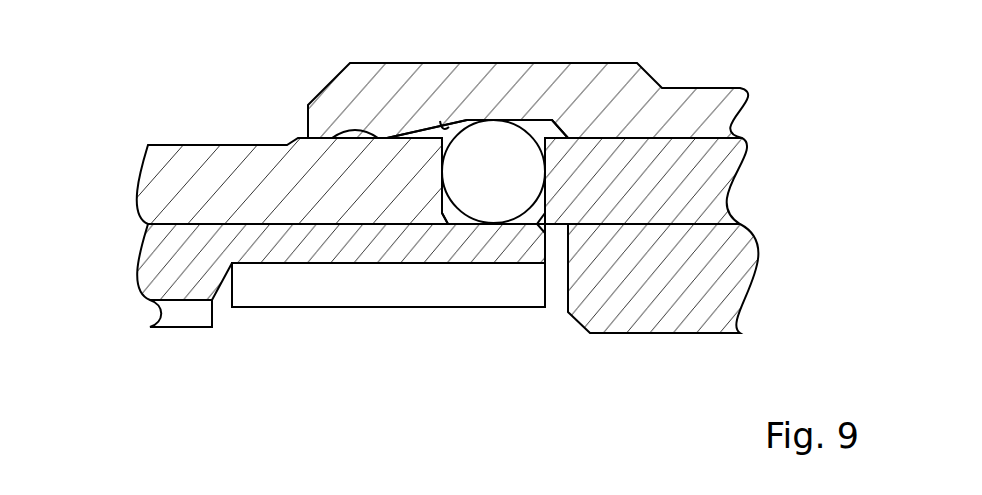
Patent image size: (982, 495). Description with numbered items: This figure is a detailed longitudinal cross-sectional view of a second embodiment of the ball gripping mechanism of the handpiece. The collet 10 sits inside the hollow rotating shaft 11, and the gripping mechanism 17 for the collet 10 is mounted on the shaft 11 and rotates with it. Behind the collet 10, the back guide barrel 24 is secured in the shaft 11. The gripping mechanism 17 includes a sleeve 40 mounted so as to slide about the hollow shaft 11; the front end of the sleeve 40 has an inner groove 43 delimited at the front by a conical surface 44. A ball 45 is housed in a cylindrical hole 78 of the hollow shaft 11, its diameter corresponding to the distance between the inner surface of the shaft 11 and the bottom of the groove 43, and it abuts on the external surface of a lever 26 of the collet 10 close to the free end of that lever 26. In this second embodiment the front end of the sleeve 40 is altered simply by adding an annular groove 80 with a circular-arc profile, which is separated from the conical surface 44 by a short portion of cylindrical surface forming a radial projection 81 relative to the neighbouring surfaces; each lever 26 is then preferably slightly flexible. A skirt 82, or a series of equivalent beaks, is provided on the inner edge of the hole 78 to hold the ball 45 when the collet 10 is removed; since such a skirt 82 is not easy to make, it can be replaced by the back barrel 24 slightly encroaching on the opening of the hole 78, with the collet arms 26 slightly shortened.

The collet 10 is at (302, 247).
The hollow rotating shaft 11 is at (98, 193).
The gripping mechanism 17 is at (472, 82).
The back guide barrel 24 is at (658, 256).
The lever 26 is at (315, 245).
The sleeve 40 is at (693, 107).
The inner groove 43 is at (542, 122).
The conical surface 44 is at (445, 120).
The ball 45 is at (500, 205).
The hole 78 is at (452, 217).
The annular groove 80 is at (355, 128).
The radial projection 81 is at (388, 135).
The skirt 82 is at (548, 220).